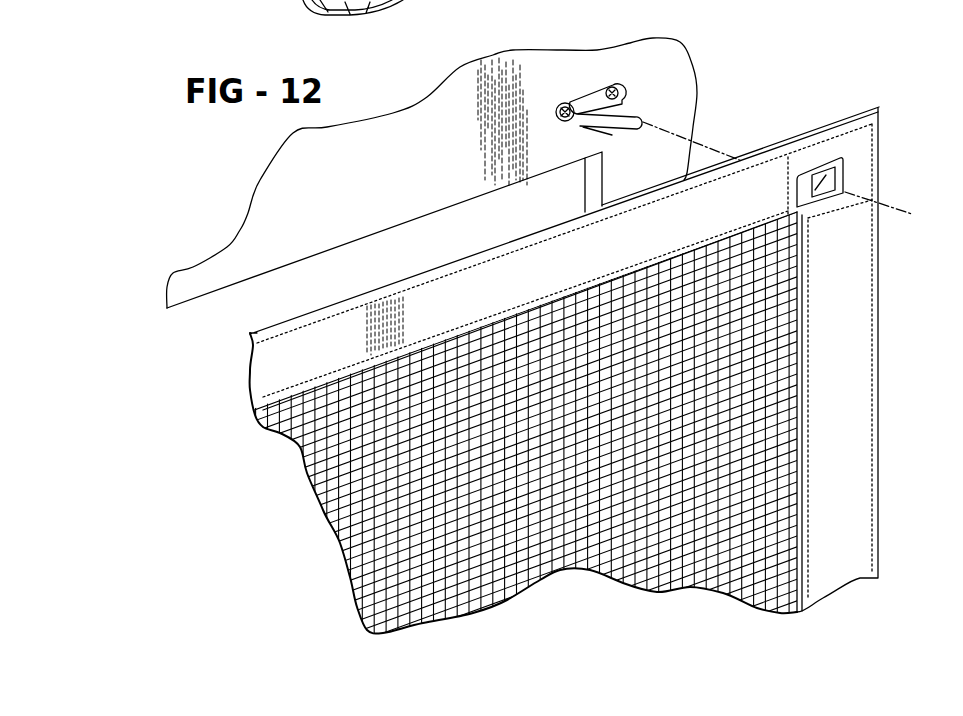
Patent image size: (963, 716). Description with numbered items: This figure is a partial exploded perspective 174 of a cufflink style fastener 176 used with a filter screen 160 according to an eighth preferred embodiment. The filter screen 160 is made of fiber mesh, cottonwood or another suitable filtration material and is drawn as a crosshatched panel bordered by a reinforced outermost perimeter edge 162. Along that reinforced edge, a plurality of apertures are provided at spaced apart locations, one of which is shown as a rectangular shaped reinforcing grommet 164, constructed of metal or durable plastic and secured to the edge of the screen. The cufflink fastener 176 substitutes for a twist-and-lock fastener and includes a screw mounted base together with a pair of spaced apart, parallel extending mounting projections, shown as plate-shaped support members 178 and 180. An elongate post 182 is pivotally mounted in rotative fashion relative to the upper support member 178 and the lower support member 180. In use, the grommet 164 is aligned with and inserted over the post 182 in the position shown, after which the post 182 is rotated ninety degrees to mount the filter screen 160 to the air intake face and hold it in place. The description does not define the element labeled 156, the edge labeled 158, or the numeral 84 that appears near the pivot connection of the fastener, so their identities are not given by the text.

The frame body 156 is at (393, 180).
The panel top edge 158 is at (253, 327).
The filter screen 160 is at (320, 517).
The reinforced outermost perimeter edge 162 is at (277, 367).
The rectangular shaped reinforcing grommet 164 is at (808, 176).
The partial exploded perspective 174 is at (160, 353).
The cufflink style fastener 176 is at (580, 96).
The upper plate-shaped support member 178 is at (590, 95).
The lower plate-shaped support member 180 is at (568, 137).
The elongate post 182 is at (637, 114).
The screw 84 is at (622, 90).